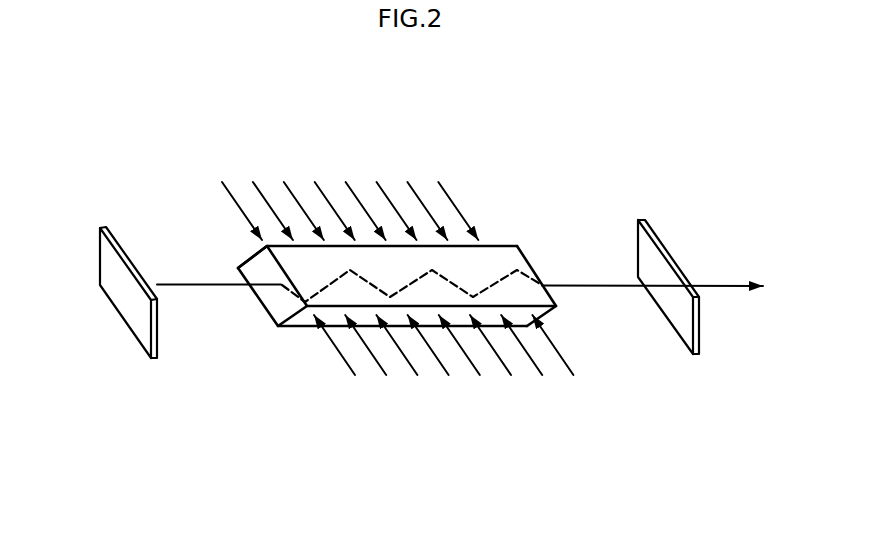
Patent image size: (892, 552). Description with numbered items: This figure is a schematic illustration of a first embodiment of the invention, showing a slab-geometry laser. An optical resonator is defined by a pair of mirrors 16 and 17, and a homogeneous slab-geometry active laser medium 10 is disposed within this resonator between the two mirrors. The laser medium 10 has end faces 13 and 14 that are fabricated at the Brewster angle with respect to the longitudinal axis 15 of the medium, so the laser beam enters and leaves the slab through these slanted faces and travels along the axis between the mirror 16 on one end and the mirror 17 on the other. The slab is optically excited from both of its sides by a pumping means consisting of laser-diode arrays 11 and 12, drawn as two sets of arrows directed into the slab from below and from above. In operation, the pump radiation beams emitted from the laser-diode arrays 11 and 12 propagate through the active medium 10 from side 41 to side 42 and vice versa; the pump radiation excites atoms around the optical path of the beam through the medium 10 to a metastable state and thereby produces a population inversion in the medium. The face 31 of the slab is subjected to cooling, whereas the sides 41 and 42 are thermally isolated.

The slab-geometry active laser medium 10 is at (596, 334).
The laser-diode array 11 is at (443, 371).
The laser-diode array 12 is at (350, 177).
The end face 13 is at (242, 263).
The end face 14 is at (532, 267).
The longitudinal axis 15 is at (198, 284).
The mirror 16 is at (98, 239).
The mirror 17 is at (673, 252).
The face 31 is at (502, 253).
The side 41 is at (302, 322).
The side 42 is at (262, 260).